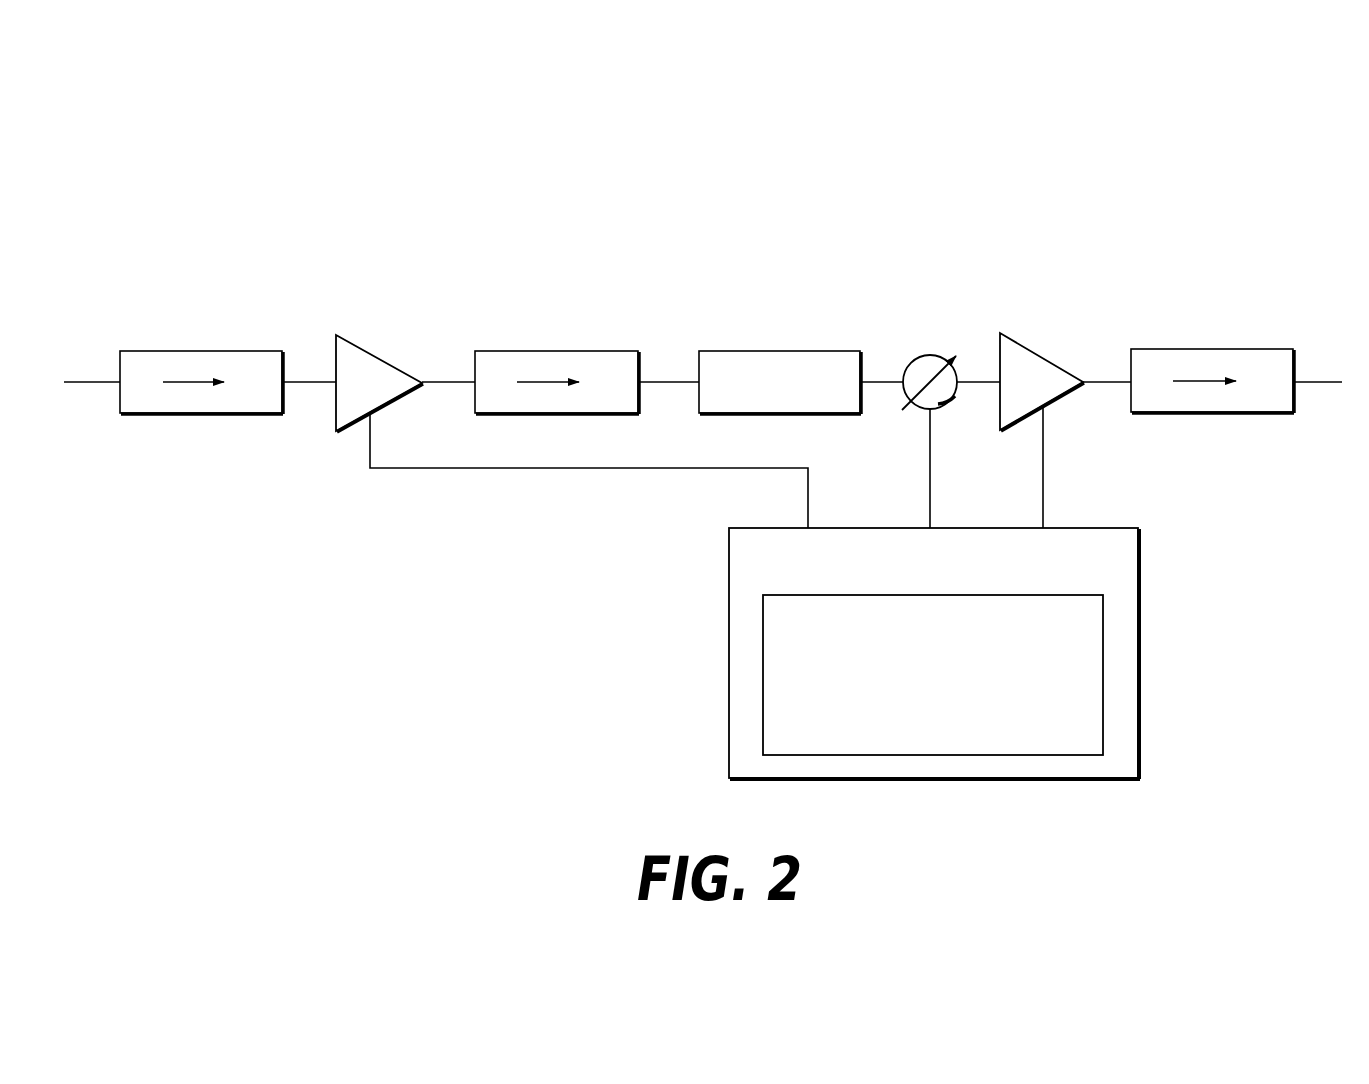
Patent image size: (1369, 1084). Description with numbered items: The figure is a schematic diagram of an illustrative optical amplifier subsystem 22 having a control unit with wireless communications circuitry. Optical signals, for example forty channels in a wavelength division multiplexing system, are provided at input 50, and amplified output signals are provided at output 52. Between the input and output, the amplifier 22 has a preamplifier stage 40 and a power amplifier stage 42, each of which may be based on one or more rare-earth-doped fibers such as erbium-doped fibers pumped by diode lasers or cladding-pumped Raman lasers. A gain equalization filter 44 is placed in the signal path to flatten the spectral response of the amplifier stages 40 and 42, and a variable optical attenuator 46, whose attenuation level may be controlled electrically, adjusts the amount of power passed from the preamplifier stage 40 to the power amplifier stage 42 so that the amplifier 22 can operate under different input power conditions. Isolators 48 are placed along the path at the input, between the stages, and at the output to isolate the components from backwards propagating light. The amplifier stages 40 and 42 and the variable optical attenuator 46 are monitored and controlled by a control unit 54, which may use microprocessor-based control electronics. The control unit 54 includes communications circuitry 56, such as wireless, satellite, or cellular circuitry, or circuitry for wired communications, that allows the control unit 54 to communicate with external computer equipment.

The amplifier subsystem 22 is at (722, 176).
The preamplifier stage 40 is at (382, 360).
The power amplifier stage 42 is at (1047, 355).
The gain equalization filter 44 is at (788, 352).
The variable optical attenuator 46 is at (938, 352).
The isolator 48 is at (203, 352).
The input 50 is at (92, 383).
The output 52 is at (1310, 382).
The control unit 54 is at (988, 778).
The communications circuitry 56 is at (902, 755).